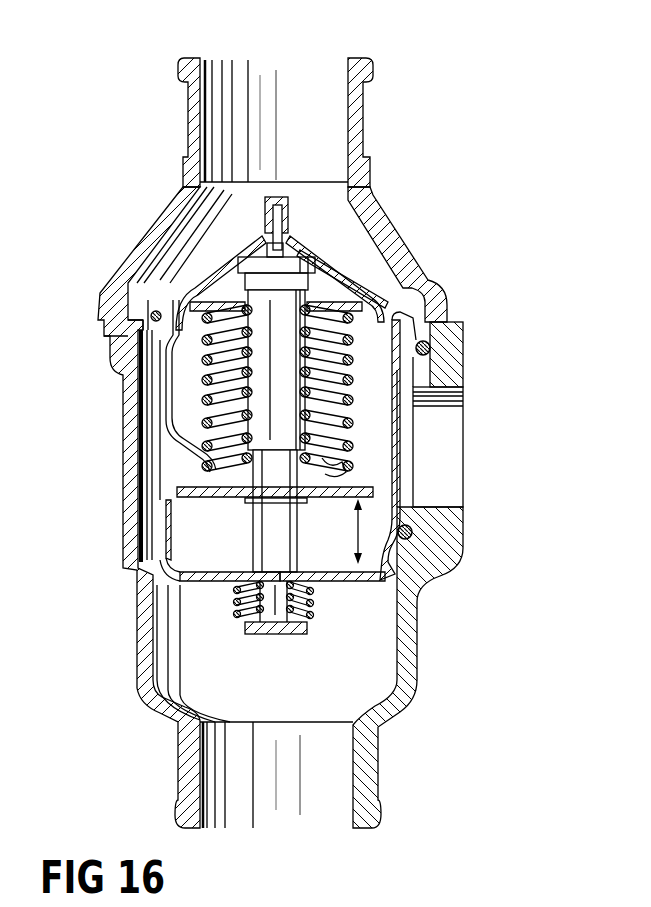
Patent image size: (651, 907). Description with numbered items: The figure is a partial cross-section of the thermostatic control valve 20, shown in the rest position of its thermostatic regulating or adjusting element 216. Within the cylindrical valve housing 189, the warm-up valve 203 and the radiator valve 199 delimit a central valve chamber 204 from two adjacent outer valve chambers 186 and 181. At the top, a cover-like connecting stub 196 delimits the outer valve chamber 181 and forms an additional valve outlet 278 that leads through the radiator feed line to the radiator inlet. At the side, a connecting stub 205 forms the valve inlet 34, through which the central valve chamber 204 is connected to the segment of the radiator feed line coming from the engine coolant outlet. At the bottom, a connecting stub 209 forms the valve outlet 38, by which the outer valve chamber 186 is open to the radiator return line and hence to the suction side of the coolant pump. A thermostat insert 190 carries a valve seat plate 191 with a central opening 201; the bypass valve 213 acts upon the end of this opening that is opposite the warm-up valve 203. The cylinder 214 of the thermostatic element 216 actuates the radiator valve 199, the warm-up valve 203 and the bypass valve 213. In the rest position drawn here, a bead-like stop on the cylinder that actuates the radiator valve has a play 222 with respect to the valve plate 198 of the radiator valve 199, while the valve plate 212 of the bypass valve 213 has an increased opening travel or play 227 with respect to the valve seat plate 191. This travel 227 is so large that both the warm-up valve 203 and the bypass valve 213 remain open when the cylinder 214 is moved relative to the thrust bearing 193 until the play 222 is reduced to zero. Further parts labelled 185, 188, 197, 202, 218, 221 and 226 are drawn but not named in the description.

The thermostatic control valve 20 is at (88, 278).
The valve inlet 34 is at (443, 427).
The valve outlet 38 is at (313, 790).
The outer valve chamber 181 is at (190, 210).
The lower nut 185 is at (297, 632).
The outer valve chamber 186 is at (363, 680).
The spring seat 188 is at (336, 464).
The cylindrical valve housing 189 is at (415, 657).
The thermostat insert 190 is at (168, 264).
The valve seat plate 191 is at (170, 566).
The thrust bearing 193 is at (352, 295).
The cover-like connecting stub 196 is at (370, 104).
The cover 197 is at (412, 290).
The valve plate 198 is at (177, 362).
The radiator valve 199 is at (330, 288).
The central opening 201 is at (196, 566).
The lower plate flange 202 is at (378, 583).
The warm-up valve 203 is at (207, 598).
The central valve chamber 204 is at (170, 462).
The connecting stub 205 is at (443, 348).
The connecting stub 209 is at (178, 758).
The valve plate 212 is at (378, 497).
The bypass valve 213 is at (170, 494).
The cylinder 214 is at (280, 404).
The thermostatic regulating or adjusting element 216 is at (292, 238).
The diaphragm 218 is at (318, 254).
The main spring 221 is at (322, 426).
The play 222 is at (178, 268).
The lower spring 226 is at (306, 612).
The opening travel or play 227 is at (355, 534).
The additional valve outlet 278 is at (296, 88).